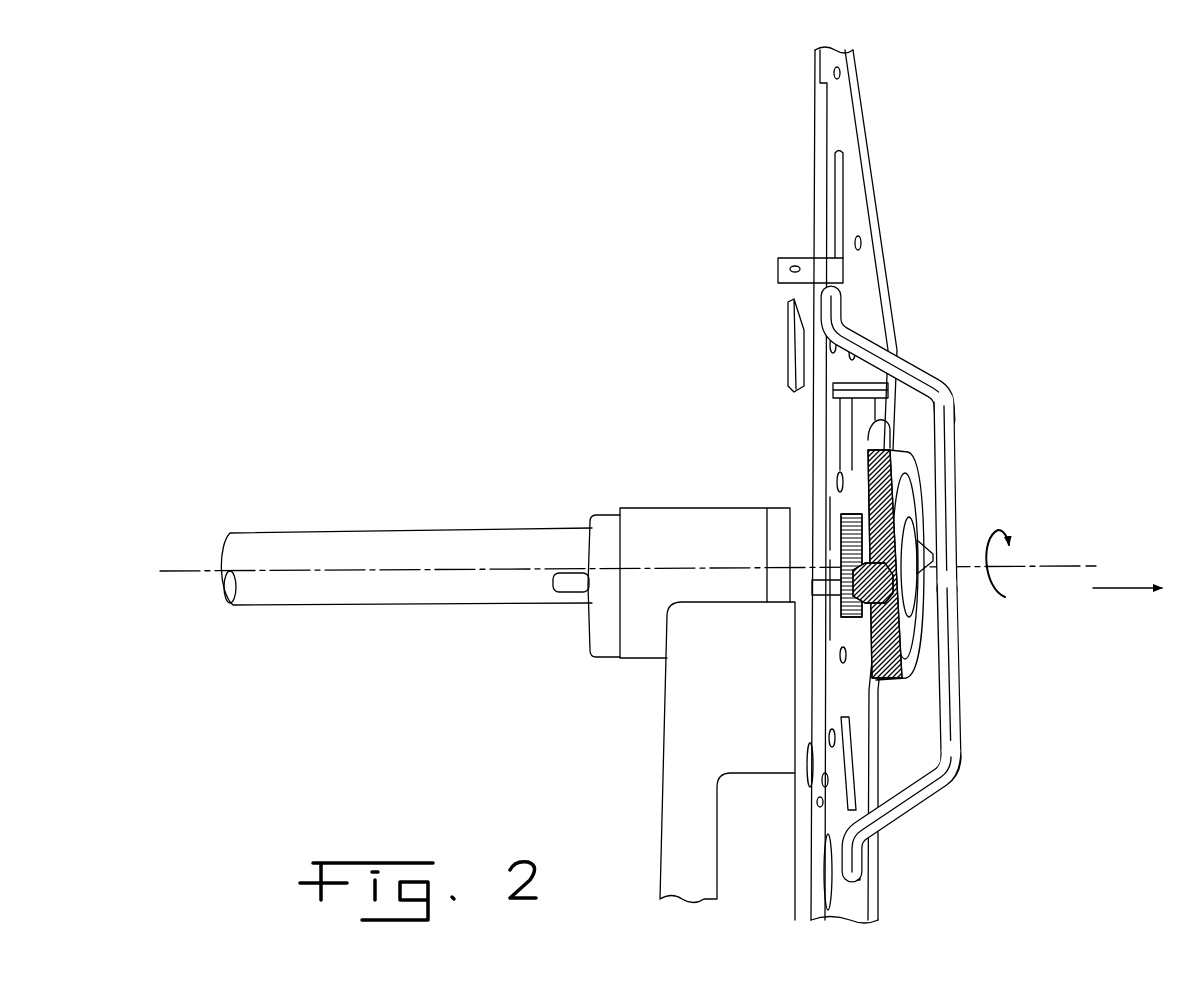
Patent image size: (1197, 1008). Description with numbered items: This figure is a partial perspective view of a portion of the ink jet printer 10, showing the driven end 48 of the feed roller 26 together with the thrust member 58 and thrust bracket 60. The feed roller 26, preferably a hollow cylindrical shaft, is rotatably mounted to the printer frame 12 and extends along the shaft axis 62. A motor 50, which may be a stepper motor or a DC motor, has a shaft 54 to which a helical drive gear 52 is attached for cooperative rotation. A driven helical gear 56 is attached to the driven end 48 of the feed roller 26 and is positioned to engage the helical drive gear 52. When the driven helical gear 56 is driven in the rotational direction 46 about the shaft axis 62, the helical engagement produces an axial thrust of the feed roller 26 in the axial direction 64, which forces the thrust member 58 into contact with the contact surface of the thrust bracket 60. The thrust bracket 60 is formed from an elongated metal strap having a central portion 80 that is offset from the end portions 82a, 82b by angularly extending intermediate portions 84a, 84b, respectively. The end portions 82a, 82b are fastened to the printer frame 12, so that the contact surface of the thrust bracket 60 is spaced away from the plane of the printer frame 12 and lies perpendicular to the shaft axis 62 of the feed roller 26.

The ink jet printer 10 is at (485, 291).
The printer frame 12 is at (880, 218).
The feed roller 26 is at (318, 538).
The rotational direction 46 is at (983, 590).
The driven end 48 is at (912, 437).
The motor 50 is at (647, 658).
The helical drive gear 52 is at (843, 530).
The shaft 54 is at (833, 580).
The driven helical gear 56 is at (868, 500).
The thrust member 58 is at (927, 546).
The thrust bracket 60 is at (962, 712).
The shaft axis 62 is at (1057, 567).
The axial direction 64 is at (1125, 590).
The central portion 80 is at (958, 524).
The end portion 82a is at (848, 300).
The end portion 82b is at (853, 880).
The intermediate portion 84a is at (910, 355).
The intermediate portion 84b is at (912, 797).